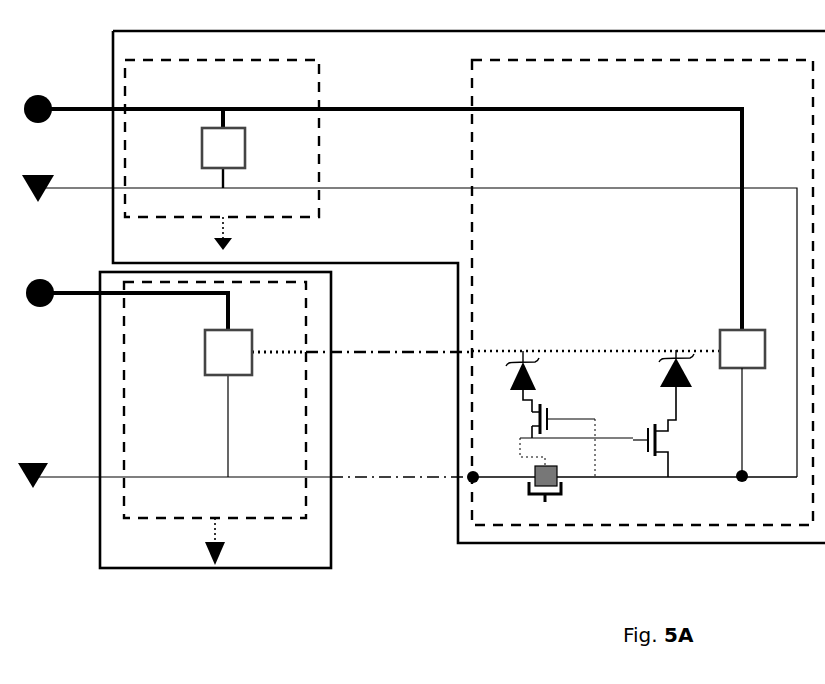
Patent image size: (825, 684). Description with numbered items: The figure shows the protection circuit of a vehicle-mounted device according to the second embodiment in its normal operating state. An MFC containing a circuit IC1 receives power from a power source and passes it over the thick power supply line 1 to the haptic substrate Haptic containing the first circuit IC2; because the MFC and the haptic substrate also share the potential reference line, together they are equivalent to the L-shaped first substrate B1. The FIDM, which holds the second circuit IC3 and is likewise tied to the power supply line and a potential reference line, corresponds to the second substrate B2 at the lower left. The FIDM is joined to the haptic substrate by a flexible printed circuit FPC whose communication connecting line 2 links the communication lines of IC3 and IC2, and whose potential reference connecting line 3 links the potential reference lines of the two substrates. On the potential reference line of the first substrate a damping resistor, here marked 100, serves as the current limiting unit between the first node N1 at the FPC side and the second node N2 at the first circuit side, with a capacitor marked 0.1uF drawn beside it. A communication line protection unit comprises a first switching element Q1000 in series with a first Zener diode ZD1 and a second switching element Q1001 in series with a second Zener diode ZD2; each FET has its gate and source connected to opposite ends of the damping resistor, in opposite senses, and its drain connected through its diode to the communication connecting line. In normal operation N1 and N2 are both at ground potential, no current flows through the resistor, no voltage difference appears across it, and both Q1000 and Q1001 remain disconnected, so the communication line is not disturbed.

The power supply line 1 is at (383, 212).
The communication connecting line 2 is at (486, 279).
The potential reference connecting line 3 is at (564, 539).
The first substrate B1 is at (469, 287).
The second substrate B2 is at (215, 420).
The element MFC is at (222, 155).
The element FIDM is at (215, 423).
The haptic substrate Haptic is at (642, 292).
The flexible printed circuit FPC is at (359, 426).
The circuit IC1 is at (223, 148).
The first circuit IC2 is at (742, 349).
The second circuit IC3 is at (228, 352).
The first diode ZD1 is at (508, 381).
The second diode ZD2 is at (686, 368).
The first switching element Q1000 is at (540, 440).
The second switching element Q1001 is at (672, 432).
The first node N1 is at (482, 466).
The second node N2 is at (752, 425).
The 100 ohm resistor 100 is at (540, 469).
The 0.1 uF capacitor 0.1uF is at (540, 501).